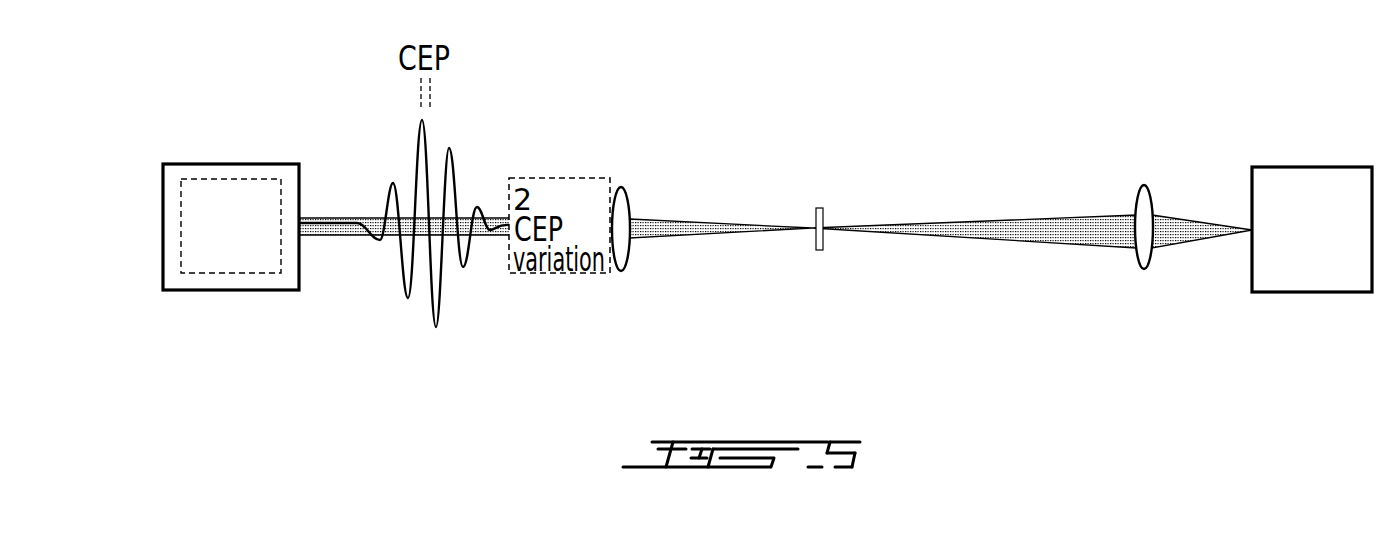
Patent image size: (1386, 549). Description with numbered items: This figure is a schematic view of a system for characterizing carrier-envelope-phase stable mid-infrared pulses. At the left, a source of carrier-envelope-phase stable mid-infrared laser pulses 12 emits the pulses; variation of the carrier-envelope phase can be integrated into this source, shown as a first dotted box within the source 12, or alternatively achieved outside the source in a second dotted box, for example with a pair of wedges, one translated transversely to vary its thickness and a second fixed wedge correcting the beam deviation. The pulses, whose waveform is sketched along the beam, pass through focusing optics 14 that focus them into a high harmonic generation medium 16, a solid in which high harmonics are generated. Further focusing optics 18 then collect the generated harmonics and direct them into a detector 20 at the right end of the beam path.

The source of CEP stable mid-infrared laser pulses 12 is at (228, 163).
The focusing optics 14 is at (619, 185).
The high harmonic generation medium 16 is at (821, 206).
The focusing optics 18 is at (1144, 184).
The detector 20 is at (1315, 165).